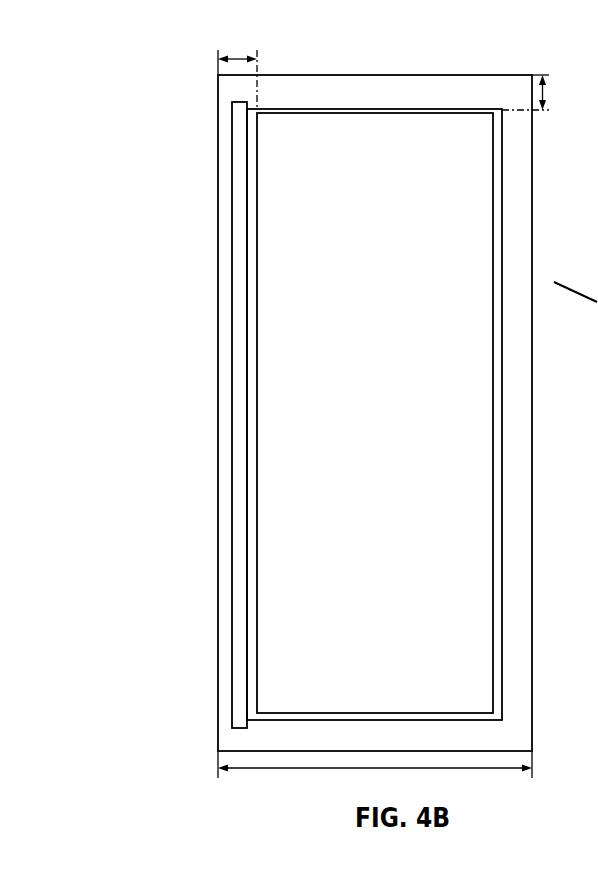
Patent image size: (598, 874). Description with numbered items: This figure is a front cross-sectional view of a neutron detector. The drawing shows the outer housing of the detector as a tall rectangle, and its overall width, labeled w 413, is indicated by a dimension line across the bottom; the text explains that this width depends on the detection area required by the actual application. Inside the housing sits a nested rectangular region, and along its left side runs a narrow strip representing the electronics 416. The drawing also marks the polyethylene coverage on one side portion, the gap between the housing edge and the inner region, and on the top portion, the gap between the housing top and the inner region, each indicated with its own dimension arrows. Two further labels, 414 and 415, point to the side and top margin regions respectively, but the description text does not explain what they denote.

The width of the detector 413 is at (423, 770).
The bezel / frame 414 is at (237, 60).
The display area 415 is at (537, 94).
The electronics 416 is at (243, 245).